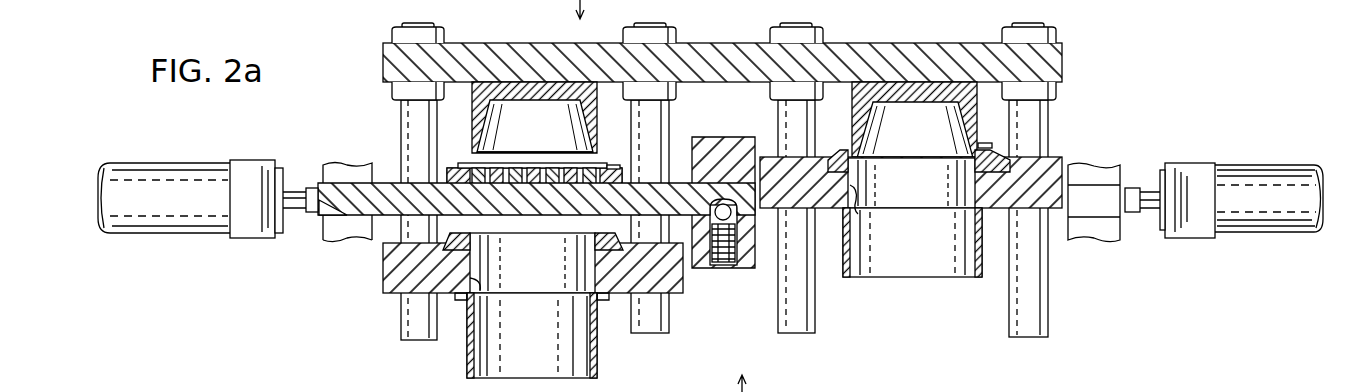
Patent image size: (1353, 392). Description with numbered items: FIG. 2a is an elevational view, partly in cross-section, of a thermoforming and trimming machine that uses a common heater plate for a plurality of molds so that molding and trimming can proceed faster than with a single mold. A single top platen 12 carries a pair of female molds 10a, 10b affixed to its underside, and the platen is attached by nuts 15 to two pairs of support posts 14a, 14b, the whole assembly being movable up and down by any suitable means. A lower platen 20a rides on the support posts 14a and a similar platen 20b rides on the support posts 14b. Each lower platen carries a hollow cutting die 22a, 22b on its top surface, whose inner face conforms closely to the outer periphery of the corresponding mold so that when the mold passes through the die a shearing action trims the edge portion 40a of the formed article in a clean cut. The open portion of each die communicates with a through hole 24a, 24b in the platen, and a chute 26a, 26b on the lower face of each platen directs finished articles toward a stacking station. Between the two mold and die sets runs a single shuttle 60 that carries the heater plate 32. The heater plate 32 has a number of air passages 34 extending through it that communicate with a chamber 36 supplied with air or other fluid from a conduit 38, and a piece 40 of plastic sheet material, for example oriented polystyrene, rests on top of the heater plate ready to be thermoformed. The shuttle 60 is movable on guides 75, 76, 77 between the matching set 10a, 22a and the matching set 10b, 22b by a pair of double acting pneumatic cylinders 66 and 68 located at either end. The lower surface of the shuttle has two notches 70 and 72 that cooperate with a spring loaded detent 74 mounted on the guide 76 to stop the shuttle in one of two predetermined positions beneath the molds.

The female mold 10a is at (551, 136).
The female mold 10b is at (941, 104).
The top platen 12 is at (544, 52).
The support posts 14a is at (402, 129).
The support posts 14b is at (792, 121).
The nuts 15 is at (392, 40).
The platen 20a is at (386, 282).
The platen 20b is at (1058, 162).
The cutting die 22a is at (530, 246).
The cutting die 22b is at (895, 168).
The through hole 24a is at (481, 284).
The through hole 24b is at (857, 200).
The chute 26a is at (597, 350).
The chute 26b is at (887, 270).
The heater plate 32 is at (455, 168).
The air passages 34 is at (521, 185).
The chamber 36 is at (612, 173).
The conduit 38 is at (532, 210).
The piece of plastic sheet material 40 is at (601, 167).
The edge portion 40a is at (990, 143).
The shuttle 60 is at (326, 207).
The double acting pneumatic cylinder 66 is at (168, 222).
The double acting pneumatic cylinder 68 is at (1263, 228).
The notch 70 is at (350, 228).
The notch 72 is at (718, 206).
The spring loaded detent 74 is at (722, 266).
The guide 75 is at (331, 166).
The guide 76 is at (704, 136).
The guide 77 is at (1093, 242).